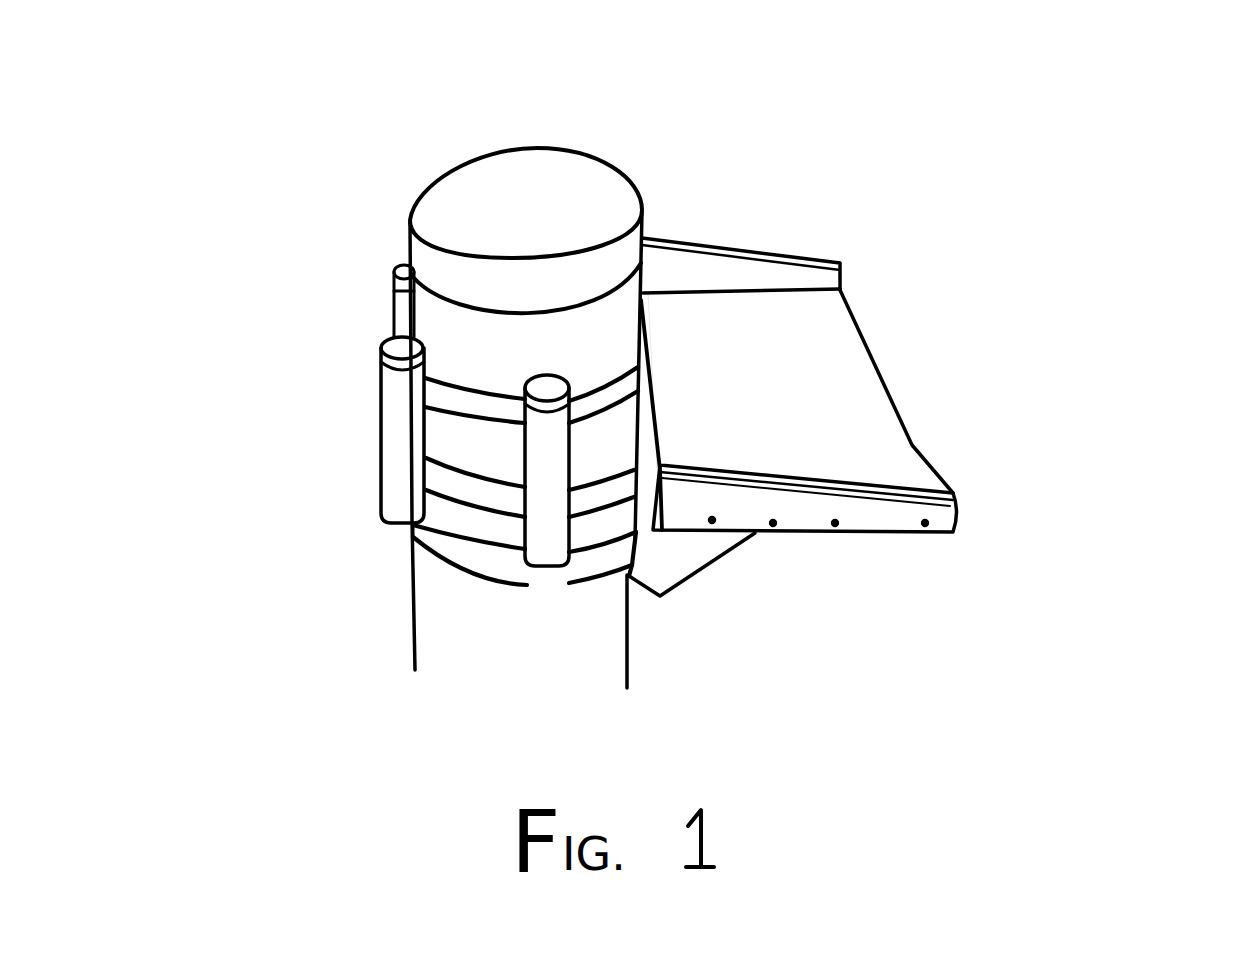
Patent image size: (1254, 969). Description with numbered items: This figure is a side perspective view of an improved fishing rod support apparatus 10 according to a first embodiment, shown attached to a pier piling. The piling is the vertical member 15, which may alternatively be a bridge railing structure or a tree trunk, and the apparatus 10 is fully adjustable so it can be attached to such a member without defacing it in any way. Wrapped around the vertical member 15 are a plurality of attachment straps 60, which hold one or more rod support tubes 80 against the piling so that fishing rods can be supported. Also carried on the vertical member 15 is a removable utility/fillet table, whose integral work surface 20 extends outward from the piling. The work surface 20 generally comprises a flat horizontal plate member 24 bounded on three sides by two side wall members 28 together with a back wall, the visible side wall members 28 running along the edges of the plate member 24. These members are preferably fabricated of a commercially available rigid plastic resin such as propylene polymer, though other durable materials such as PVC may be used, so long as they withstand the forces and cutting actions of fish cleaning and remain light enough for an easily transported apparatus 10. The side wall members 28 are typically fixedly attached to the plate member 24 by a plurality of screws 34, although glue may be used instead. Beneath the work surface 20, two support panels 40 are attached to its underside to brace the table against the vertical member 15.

The fishing rod support apparatus 10 is at (985, 286).
The vertical member 15 is at (537, 200).
The work surface 20 is at (913, 450).
The horizontal plate member 24 is at (793, 412).
The side wall members 28 is at (723, 277).
The screws 34 is at (790, 528).
The support panels 40 is at (697, 553).
The attachment straps 60 is at (462, 400).
The rod support tubes 80 is at (403, 310).